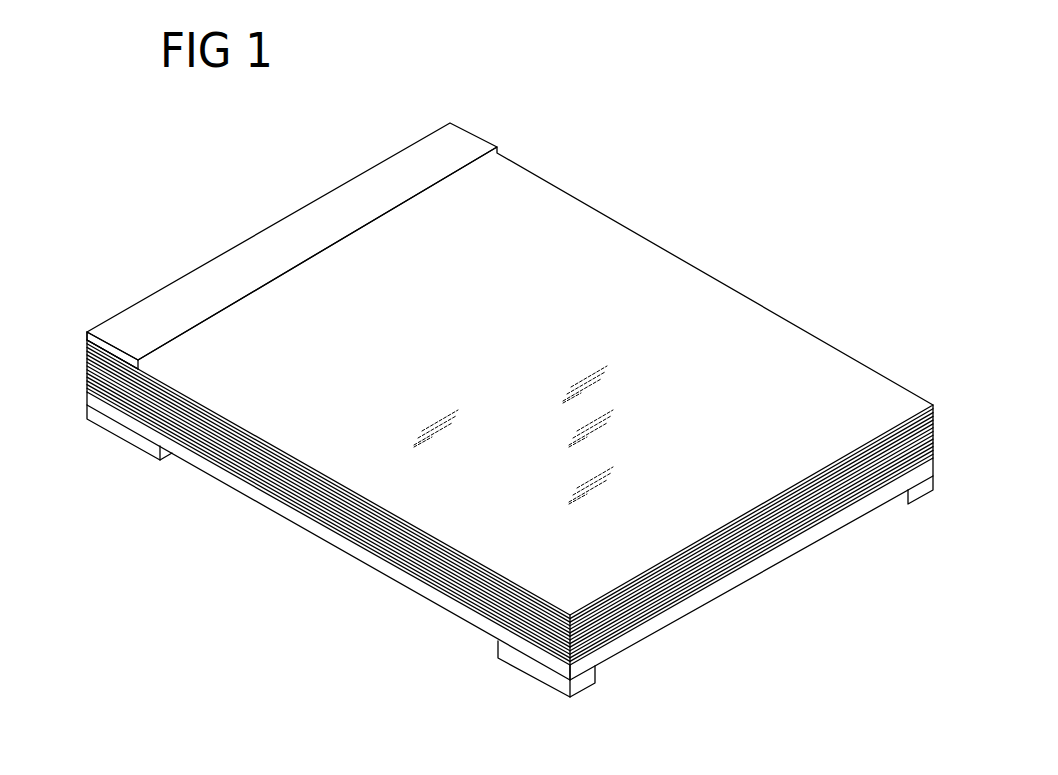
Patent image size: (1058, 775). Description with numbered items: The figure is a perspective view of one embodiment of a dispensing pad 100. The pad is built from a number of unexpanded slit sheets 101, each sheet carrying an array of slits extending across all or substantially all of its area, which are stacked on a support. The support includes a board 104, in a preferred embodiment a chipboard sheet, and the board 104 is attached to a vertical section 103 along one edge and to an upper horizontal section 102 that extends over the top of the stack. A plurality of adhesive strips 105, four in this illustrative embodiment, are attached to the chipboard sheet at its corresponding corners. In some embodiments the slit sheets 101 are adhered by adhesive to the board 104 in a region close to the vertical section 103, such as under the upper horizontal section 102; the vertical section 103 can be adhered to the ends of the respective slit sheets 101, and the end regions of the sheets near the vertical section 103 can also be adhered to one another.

The dispensing pad 100 is at (622, 127).
The unexpanded slit sheets 101 is at (753, 303).
The upper horizontal section 102 is at (198, 262).
The vertical section 103 is at (85, 380).
The board 104 is at (298, 522).
The adhesive strips 105 is at (533, 675).